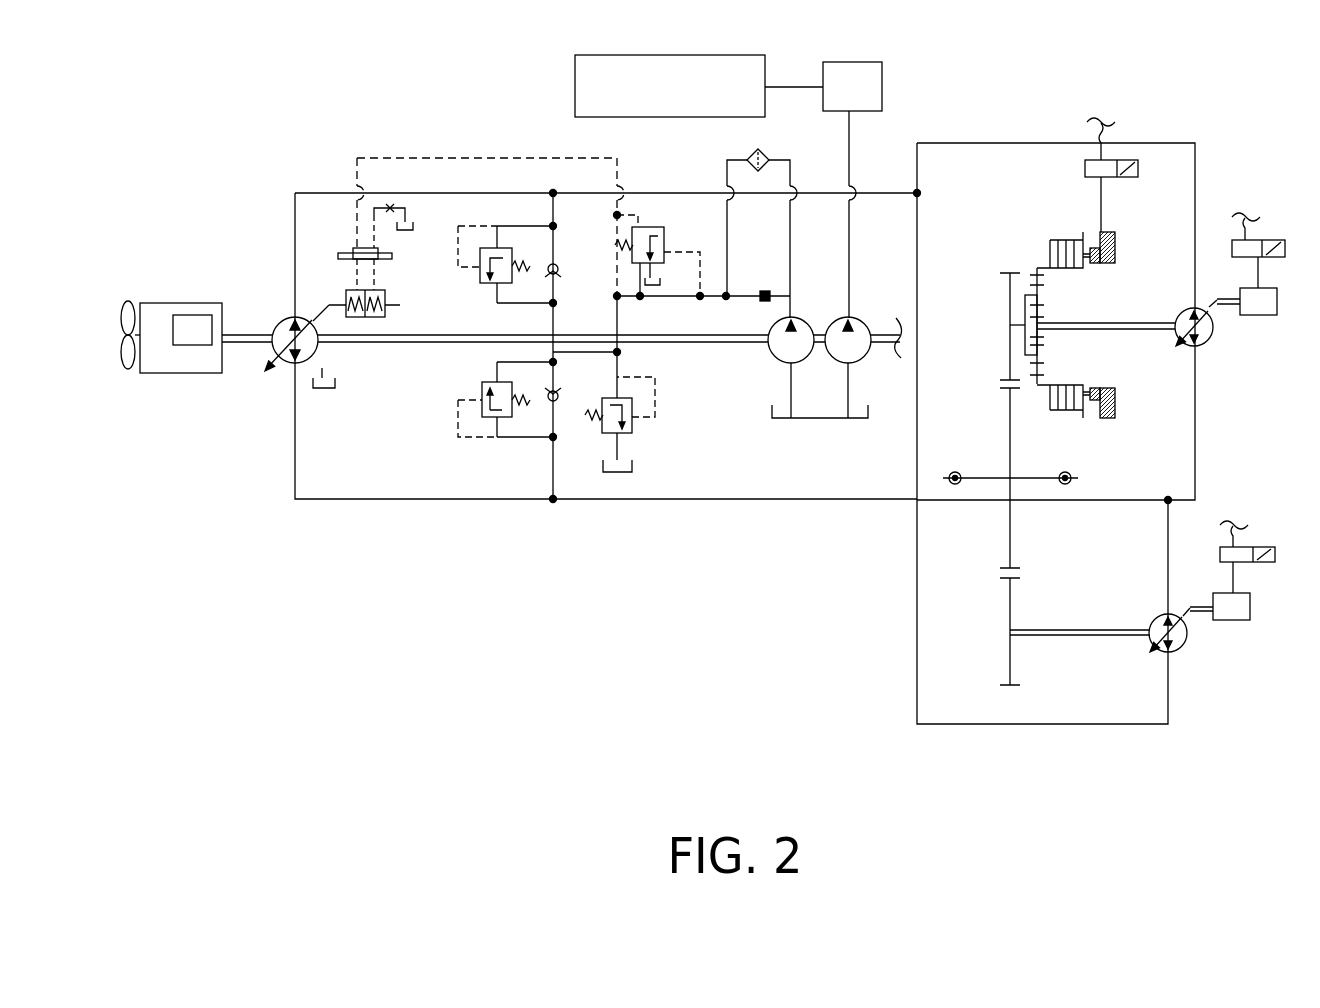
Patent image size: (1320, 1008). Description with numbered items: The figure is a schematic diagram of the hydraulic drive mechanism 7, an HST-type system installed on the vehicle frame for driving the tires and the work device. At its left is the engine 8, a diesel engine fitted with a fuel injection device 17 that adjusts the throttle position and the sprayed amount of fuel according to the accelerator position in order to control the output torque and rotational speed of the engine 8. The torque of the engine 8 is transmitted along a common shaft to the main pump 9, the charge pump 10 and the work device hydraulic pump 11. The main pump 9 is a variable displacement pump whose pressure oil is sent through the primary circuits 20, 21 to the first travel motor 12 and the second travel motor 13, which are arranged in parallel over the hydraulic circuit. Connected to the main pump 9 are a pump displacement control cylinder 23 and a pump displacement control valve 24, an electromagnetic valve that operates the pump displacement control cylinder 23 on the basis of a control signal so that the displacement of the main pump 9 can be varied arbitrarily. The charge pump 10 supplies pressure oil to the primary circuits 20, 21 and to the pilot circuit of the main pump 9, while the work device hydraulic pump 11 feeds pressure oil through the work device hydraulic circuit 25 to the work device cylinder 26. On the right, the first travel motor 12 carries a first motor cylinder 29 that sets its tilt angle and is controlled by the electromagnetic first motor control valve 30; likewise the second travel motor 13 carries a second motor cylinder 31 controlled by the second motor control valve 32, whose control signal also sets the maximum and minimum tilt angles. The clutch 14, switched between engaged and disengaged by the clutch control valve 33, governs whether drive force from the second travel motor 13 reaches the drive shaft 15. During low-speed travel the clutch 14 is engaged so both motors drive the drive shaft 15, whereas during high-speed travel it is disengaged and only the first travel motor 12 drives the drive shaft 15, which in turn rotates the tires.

The hydraulic drive mechanism 7 is at (475, 105).
The engine 8 is at (161, 305).
The main pump 9 is at (320, 347).
The charge pump 10 is at (772, 358).
The work device hydraulic pump 11 is at (870, 355).
The first travel motor 12 is at (1156, 616).
The second travel motor 13 is at (1182, 312).
The clutch 14 is at (1068, 232).
The drive shaft 15 is at (1030, 480).
The fuel injection device 17 is at (198, 322).
The primary circuit 20 is at (688, 500).
The primary circuit 21 is at (674, 176).
The pump displacement control cylinder 23 is at (386, 313).
The pump displacement control valve 24 is at (354, 247).
The work device hydraulic circuit 25 is at (883, 85).
The work device cylinder 26 is at (575, 88).
The first motor cylinder 29 is at (1232, 620).
The first motor control valve 30 is at (1220, 552).
The second motor cylinder 31 is at (1258, 315).
The second motor control valve 32 is at (1232, 250).
The clutch control valve 33 is at (1085, 168).